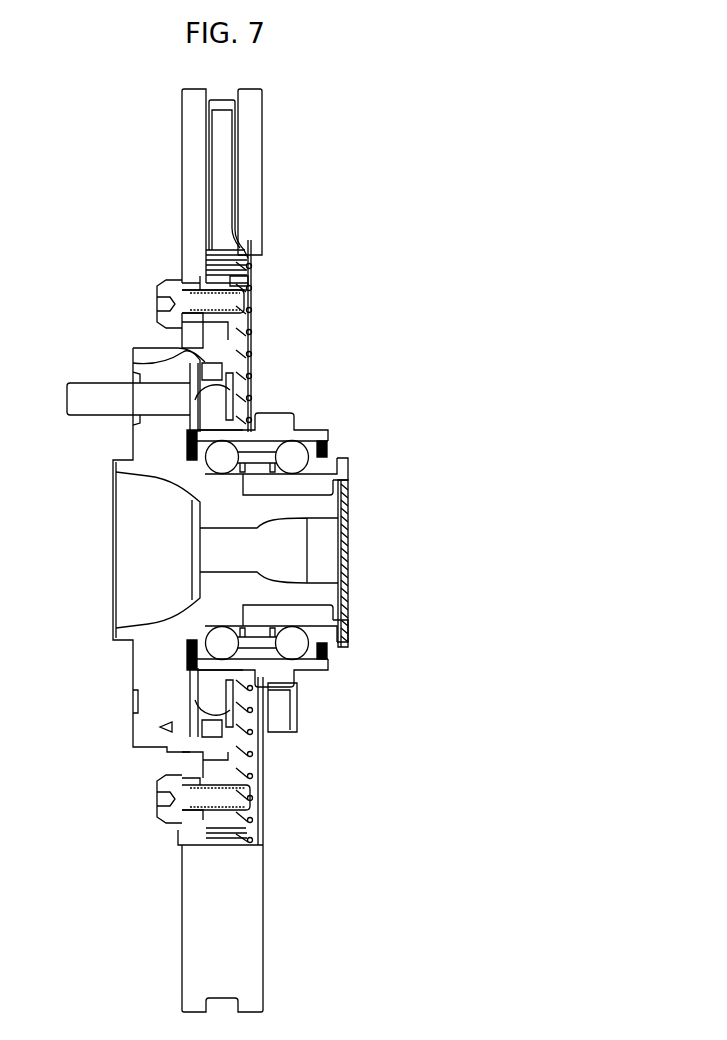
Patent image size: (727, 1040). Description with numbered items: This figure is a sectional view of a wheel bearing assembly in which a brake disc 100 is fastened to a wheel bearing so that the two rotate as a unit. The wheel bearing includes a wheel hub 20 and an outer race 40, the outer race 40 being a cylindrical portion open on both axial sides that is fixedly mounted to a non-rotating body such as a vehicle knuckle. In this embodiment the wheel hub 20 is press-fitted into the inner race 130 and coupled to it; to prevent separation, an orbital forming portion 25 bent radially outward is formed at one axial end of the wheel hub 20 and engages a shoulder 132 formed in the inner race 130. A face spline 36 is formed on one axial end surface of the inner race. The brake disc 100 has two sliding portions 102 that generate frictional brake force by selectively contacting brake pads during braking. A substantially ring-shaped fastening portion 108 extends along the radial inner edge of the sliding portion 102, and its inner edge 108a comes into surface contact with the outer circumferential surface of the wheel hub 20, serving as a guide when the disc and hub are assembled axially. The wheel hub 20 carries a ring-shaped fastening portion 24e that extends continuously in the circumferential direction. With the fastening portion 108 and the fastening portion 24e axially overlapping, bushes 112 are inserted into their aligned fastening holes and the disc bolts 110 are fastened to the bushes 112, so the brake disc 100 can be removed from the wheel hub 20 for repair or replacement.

The brake disc 100 is at (231, 189).
The sliding portion 102 is at (181, 173).
The disc bolt 110 is at (164, 285).
The bush 112 is at (250, 281).
The fastening portion 108 is at (192, 333).
The inner edge 108a is at (181, 352).
The fastening portion 24e is at (252, 331).
The outer race 40 is at (281, 413).
The inner race 130 is at (329, 474).
The shoulder 132 is at (350, 470).
The orbital forming portion 25 is at (349, 490).
The face spline 36 is at (351, 587).
The wheel hub 20 is at (123, 671).